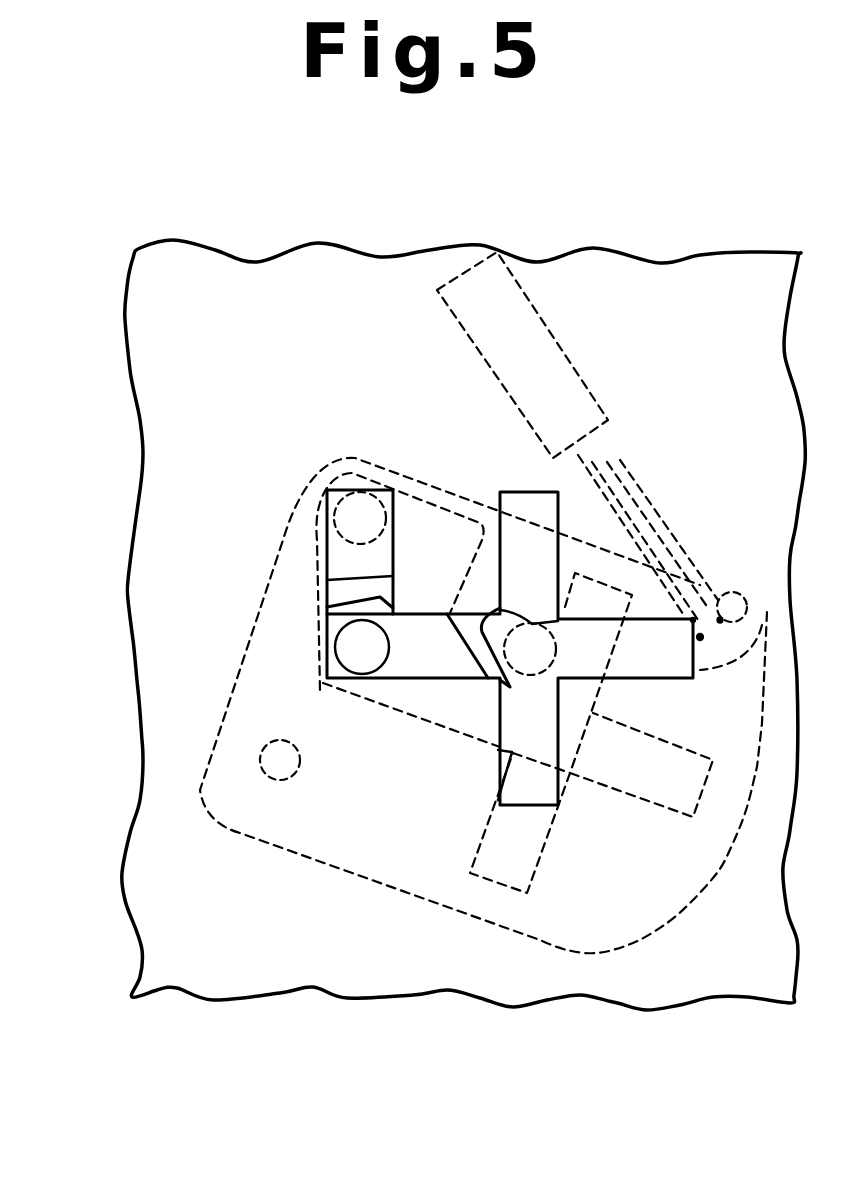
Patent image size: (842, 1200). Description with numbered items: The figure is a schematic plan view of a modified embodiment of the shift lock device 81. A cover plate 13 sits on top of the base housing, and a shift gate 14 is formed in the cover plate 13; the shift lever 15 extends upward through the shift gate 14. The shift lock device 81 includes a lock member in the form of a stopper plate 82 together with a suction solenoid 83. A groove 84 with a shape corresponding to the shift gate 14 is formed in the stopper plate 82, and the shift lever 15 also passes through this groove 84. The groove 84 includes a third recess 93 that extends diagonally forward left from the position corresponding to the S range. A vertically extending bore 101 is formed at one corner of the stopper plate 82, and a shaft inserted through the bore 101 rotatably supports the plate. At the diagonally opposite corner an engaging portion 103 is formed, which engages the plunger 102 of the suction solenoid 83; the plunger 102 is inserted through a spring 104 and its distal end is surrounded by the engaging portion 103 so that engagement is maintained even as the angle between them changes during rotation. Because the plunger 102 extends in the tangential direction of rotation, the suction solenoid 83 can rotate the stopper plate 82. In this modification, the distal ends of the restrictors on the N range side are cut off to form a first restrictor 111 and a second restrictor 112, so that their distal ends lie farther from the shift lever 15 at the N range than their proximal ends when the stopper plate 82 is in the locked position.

The cover plate 13 is at (137, 302).
The shift lock device 81 is at (207, 437).
The stopper plate 82 is at (400, 887).
The suction solenoid 83 is at (528, 290).
The groove 84 is at (429, 500).
The plunger 102 is at (613, 467).
The spring 104 is at (662, 512).
The engaging portion 103 is at (743, 573).
The third recess 93 is at (553, 648).
The shift gate 14 is at (558, 762).
The shift lever 15 is at (326, 630).
The first restrictor 111 is at (378, 680).
The second restrictor 112 is at (475, 645).
The bore 101 is at (272, 772).